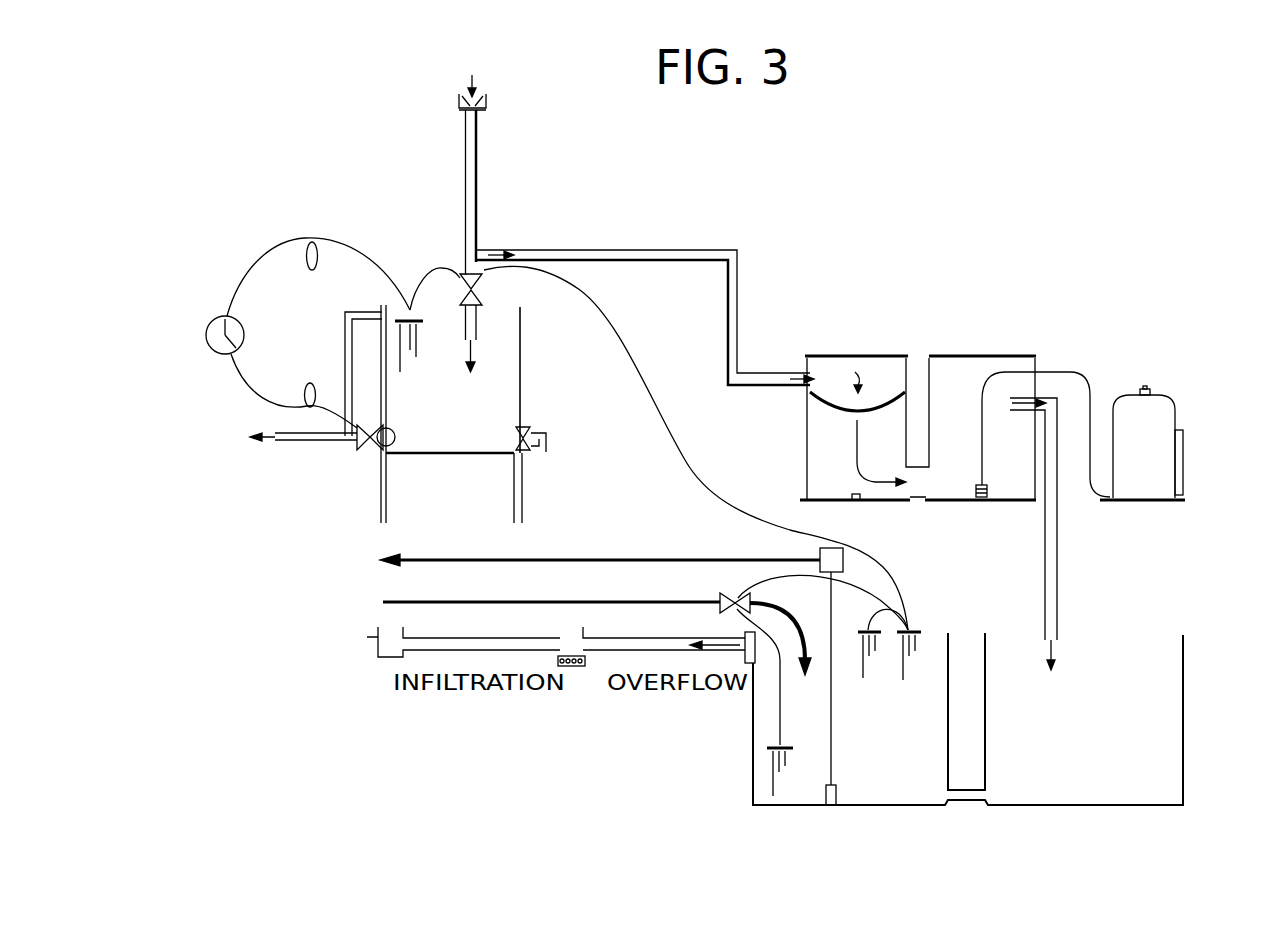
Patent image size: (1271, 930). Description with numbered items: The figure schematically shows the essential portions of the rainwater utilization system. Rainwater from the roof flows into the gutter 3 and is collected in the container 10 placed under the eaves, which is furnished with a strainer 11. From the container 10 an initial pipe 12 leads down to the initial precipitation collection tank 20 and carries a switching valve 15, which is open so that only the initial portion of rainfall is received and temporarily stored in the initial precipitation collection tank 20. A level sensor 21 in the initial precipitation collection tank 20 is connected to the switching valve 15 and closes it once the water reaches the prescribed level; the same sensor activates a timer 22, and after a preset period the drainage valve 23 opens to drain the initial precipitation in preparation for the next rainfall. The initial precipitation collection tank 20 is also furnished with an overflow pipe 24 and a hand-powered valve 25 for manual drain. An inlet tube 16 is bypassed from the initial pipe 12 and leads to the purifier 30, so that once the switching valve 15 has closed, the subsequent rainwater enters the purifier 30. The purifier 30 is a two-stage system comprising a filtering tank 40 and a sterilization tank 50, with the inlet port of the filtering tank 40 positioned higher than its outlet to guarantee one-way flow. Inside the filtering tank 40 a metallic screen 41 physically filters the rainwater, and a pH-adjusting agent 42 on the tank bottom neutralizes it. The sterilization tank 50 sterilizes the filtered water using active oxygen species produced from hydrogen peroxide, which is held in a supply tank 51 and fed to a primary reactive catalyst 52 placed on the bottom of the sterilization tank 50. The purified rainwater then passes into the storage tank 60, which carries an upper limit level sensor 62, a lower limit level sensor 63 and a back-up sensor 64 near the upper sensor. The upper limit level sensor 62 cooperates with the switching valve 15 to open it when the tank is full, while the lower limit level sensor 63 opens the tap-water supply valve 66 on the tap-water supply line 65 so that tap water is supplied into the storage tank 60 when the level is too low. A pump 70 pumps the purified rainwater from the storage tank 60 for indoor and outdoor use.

The gutter 3 is at (485, 97).
The container 10 is at (490, 103).
The strainer 11 is at (479, 117).
The initial pipe 12 is at (478, 190).
The switching valve 15 is at (484, 284).
The inlet tube 16 is at (636, 248).
The initial precipitation collection tank 20 is at (522, 330).
The level sensor 21 is at (425, 330).
The timer 22 is at (222, 316).
The drainage valve 23 is at (366, 455).
The overflow pipe 24 is at (372, 312).
The hand-powered valve 25 is at (535, 431).
The purifier 30 is at (928, 282).
The filtering tank 40 is at (858, 355).
The metallic screen 41 is at (832, 402).
The pH-adjusting agent 42 is at (860, 503).
The sterilization tank 50 is at (982, 355).
The supply tank 51 is at (1128, 394).
The primary reactive catalyst 52 is at (990, 500).
The storage tank 60 is at (1185, 662).
The upper limit level sensor 62 is at (915, 630).
The lower limit level sensor 63 is at (765, 750).
The back-up sensor 64 is at (862, 642).
The tap water supply pipe 65 is at (556, 600).
The tap-water supply valve 66 is at (725, 596).
The pump 70 is at (818, 556).